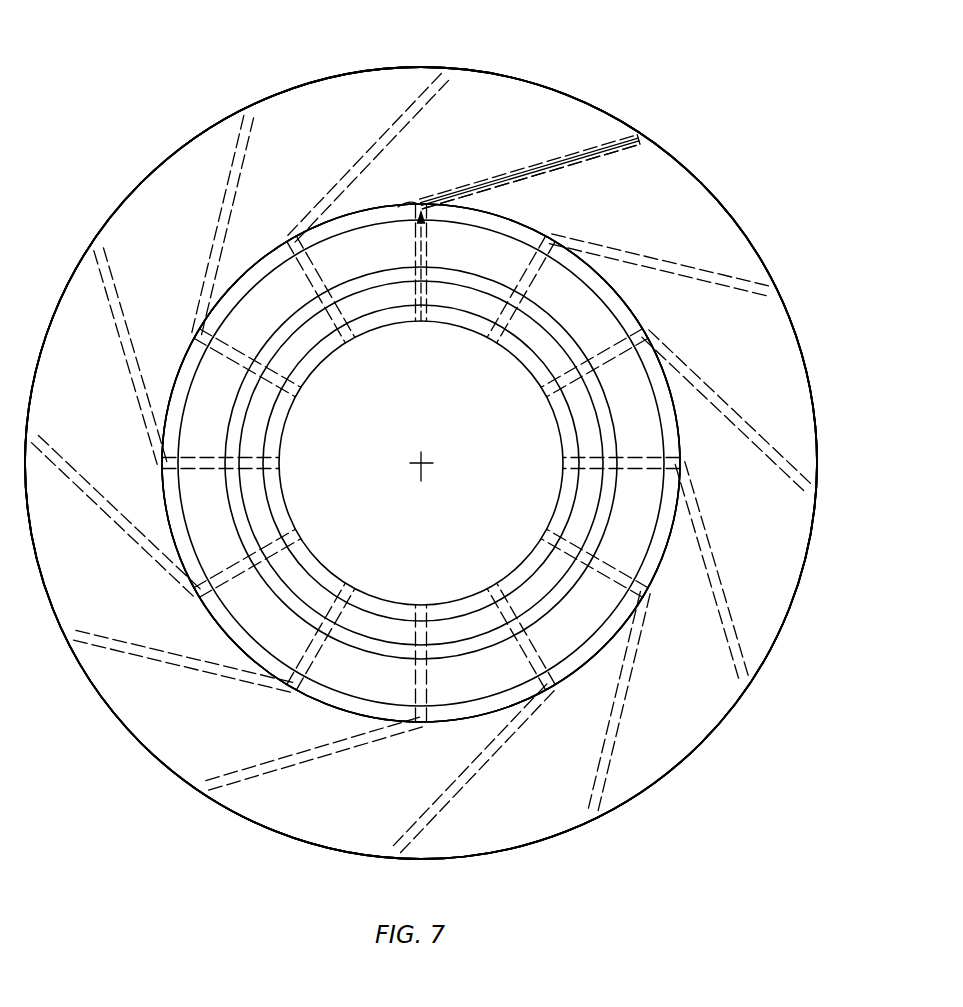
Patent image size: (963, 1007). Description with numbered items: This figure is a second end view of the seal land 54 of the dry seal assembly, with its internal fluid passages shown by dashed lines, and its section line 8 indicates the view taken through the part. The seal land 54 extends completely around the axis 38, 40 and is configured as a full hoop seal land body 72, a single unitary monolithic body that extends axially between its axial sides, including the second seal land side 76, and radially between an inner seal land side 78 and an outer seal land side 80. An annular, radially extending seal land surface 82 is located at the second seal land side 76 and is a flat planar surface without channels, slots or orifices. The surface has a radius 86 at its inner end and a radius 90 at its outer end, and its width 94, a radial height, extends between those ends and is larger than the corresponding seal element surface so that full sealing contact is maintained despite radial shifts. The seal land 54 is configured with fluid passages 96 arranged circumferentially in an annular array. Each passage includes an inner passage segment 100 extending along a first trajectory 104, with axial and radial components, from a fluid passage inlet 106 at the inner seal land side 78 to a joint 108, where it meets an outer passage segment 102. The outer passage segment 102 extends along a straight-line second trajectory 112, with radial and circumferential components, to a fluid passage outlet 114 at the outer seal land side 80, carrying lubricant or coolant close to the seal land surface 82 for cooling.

The section line for FIG. 8 is at (210, 292).
The axis 38 is at (471, 444).
The centerline 40 is at (425, 460).
The seal land 54 is at (742, 83).
The seal land body 72 is at (722, 193).
The second seal land side 76 is at (444, 463).
The inner seal land side 78 is at (320, 562).
The outer seal land side 80 is at (133, 737).
The seal land surface 82 is at (783, 350).
The radius of inner end of seal land surface 86 is at (385, 717).
The radius of outer end of seal land surface 90 is at (421, 468).
The width of seal land surface 94 is at (340, 713).
The fluid passages 96 is at (606, 160).
The inner passage segment 100 is at (401, 212).
The outer passage segment 102 is at (637, 123).
The first trajectory 104 is at (428, 240).
The fluid passage inlet 106 is at (421, 323).
The joint 108 is at (406, 203).
The second trajectory 112 is at (560, 168).
The fluid passage outlet 114 is at (641, 137).